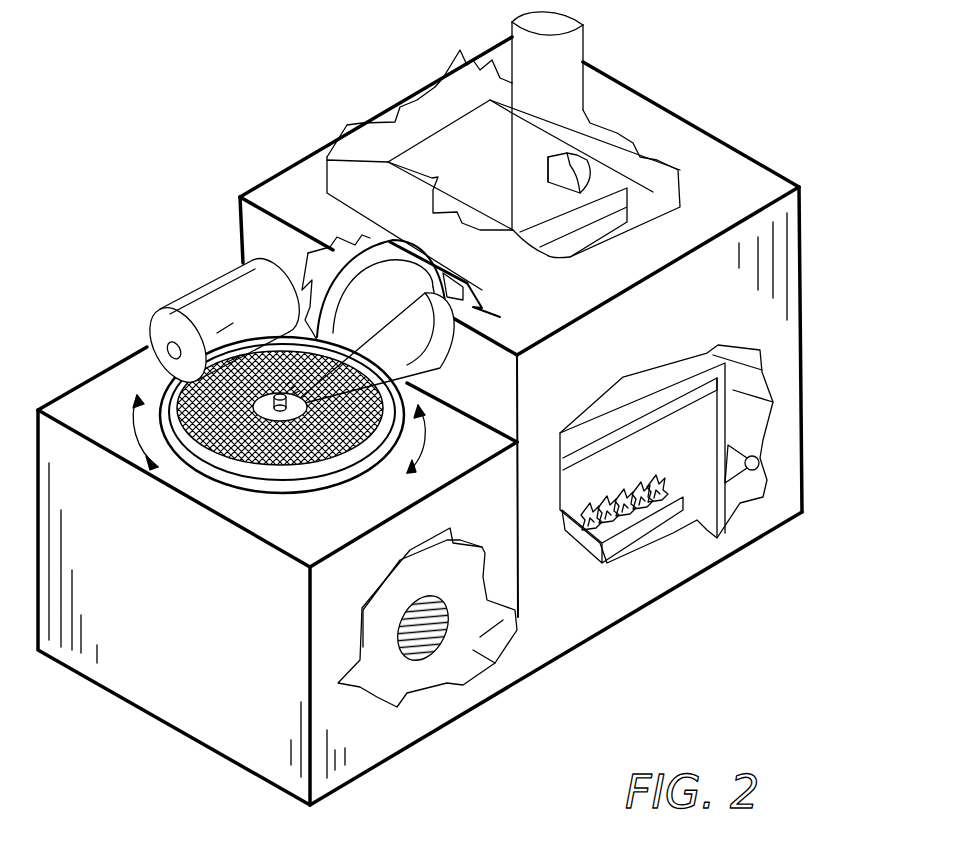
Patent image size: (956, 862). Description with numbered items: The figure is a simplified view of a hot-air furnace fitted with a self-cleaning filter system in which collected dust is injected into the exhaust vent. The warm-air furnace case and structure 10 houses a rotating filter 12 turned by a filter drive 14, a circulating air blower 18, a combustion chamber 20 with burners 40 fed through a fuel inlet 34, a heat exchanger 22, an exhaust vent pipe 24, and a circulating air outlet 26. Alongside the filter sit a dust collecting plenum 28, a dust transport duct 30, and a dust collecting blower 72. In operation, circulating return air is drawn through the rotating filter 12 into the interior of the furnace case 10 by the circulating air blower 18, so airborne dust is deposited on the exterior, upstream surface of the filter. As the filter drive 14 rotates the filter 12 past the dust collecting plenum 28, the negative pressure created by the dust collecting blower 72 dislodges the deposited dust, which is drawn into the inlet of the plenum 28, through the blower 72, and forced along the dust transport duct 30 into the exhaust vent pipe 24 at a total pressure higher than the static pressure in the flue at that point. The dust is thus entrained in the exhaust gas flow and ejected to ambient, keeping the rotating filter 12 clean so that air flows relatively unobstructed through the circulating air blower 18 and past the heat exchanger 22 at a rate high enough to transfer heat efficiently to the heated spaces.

The warm-air furnace case and structure 10 is at (693, 155).
The rotating filter 12 is at (365, 467).
The filter drive 14 is at (193, 312).
The circulating air blower 18 is at (443, 663).
The combustion chamber 20 is at (635, 510).
The heat exchanger 22 is at (670, 432).
The exhaust vent pipe (flue) 24 is at (553, 68).
The circulating air outlet 26 is at (473, 87).
The dust collecting plenum 28 is at (433, 381).
The dust transport duct 30 is at (567, 175).
The fuel inlet 34 is at (759, 462).
The burners 40 is at (613, 540).
The dust collecting blower 72 is at (470, 302).